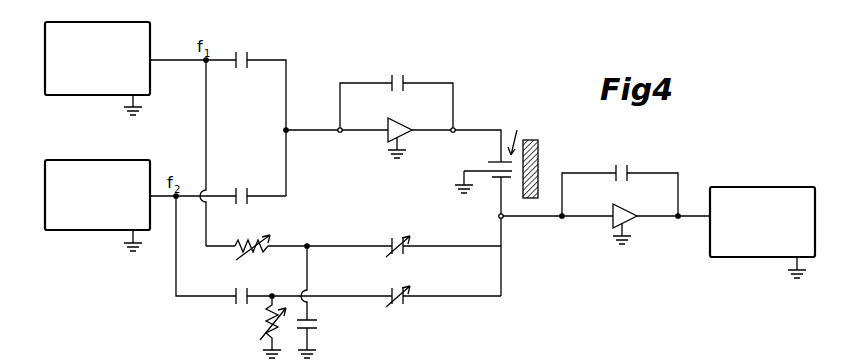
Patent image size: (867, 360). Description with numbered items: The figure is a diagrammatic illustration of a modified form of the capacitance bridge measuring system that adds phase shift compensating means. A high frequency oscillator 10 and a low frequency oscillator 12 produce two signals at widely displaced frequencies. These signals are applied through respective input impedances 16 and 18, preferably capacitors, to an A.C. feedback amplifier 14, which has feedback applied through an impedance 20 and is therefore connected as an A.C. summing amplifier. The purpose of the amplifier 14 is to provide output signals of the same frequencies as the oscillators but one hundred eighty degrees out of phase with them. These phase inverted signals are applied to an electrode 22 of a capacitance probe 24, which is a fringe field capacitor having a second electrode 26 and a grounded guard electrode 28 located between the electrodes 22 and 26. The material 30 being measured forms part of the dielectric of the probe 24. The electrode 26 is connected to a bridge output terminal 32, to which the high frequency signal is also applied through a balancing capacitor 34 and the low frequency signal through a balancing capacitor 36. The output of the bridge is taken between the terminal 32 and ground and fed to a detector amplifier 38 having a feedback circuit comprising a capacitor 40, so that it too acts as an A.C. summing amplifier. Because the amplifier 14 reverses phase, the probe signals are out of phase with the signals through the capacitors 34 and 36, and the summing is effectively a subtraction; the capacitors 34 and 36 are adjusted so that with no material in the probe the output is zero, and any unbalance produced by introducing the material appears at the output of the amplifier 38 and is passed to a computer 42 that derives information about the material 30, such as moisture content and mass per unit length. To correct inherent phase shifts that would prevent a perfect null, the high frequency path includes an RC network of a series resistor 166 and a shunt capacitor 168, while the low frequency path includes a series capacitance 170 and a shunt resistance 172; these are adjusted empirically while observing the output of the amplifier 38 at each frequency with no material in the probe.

The high frequency oscillator 10 is at (130, 22).
The low frequency oscillator 12 is at (128, 160).
The A.C. feedback amplifier 14 is at (404, 122).
The input impedance 16 is at (248, 56).
The input impedance 18 is at (248, 192).
The feedback impedance 20 is at (405, 80).
The electrode 22 is at (500, 160).
The capacitance probe 24 is at (515, 133).
The electrode 26 is at (498, 179).
The grounded guard electrode 28 is at (487, 168).
The material being measured 30 is at (538, 150).
The bridge output terminal 32 is at (498, 217).
The balancing capacitor 34 is at (388, 240).
The balancing capacitor 36 is at (388, 290).
The detector amplifier 38 is at (628, 206).
The feedback capacitor 40 is at (628, 170).
The computer 42 is at (778, 187).
The series resistor 166 is at (268, 242).
The shunt capacitor 168 is at (316, 318).
The series capacitance 170 is at (249, 292).
The shunt resistance 172 is at (262, 322).